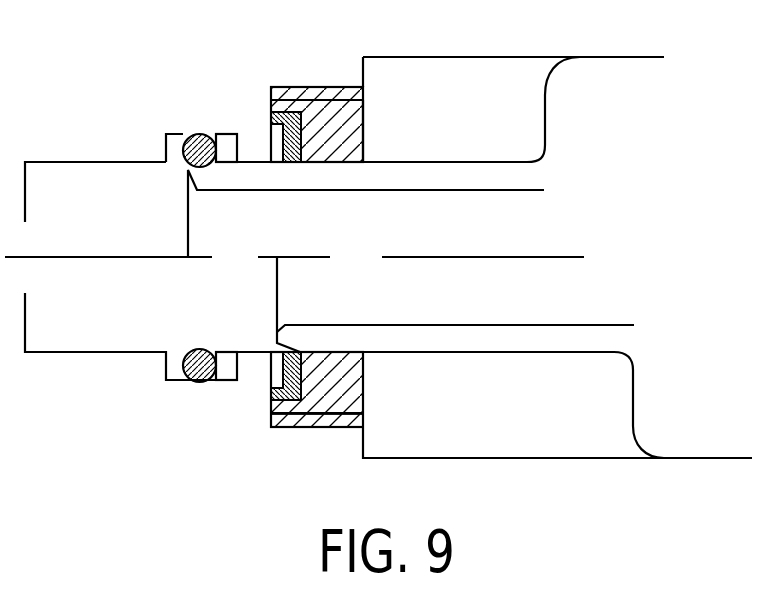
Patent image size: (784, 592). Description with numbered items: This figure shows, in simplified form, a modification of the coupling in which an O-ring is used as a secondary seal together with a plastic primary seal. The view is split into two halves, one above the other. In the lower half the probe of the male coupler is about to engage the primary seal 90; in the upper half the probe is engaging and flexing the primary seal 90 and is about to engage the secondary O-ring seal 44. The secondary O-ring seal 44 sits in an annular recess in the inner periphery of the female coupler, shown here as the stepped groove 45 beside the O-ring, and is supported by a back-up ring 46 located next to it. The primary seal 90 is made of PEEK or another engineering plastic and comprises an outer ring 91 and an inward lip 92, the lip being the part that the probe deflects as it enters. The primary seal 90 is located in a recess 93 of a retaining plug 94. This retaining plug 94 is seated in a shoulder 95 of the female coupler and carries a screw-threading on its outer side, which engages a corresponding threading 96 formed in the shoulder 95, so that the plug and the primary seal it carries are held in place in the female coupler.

The secondary O-ring seal 44 is at (198, 136).
The annular groove 45 is at (165, 138).
The back-up ring 46 is at (228, 138).
The primary seal 90 is at (340, 220).
The outer ring 91 is at (285, 98).
The inward lip 92 is at (290, 160).
The recess 93 is at (305, 145).
The retaining plug 94 is at (362, 133).
The shoulder 95 is at (358, 95).
The threading 96 is at (340, 84).